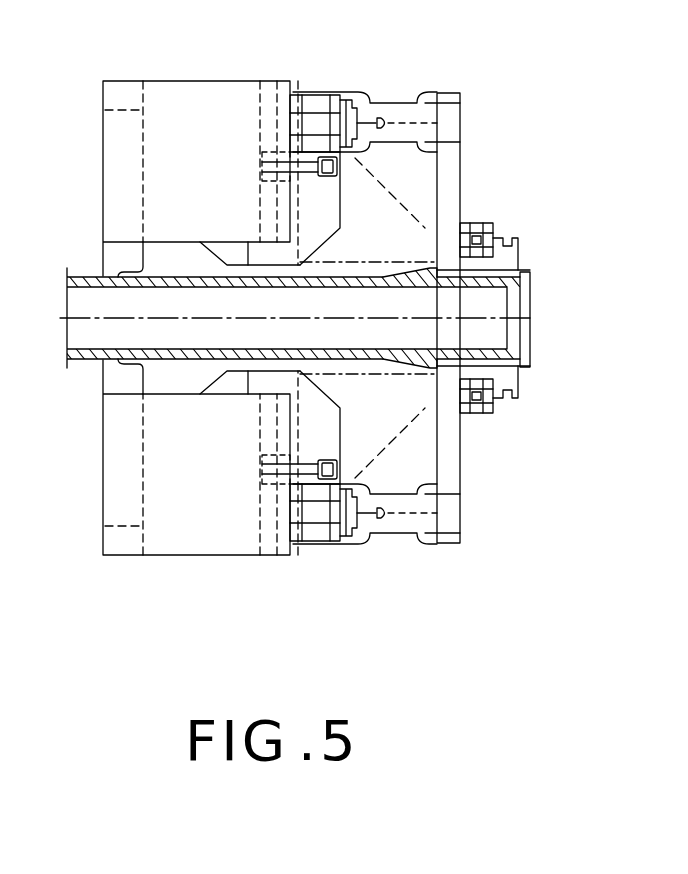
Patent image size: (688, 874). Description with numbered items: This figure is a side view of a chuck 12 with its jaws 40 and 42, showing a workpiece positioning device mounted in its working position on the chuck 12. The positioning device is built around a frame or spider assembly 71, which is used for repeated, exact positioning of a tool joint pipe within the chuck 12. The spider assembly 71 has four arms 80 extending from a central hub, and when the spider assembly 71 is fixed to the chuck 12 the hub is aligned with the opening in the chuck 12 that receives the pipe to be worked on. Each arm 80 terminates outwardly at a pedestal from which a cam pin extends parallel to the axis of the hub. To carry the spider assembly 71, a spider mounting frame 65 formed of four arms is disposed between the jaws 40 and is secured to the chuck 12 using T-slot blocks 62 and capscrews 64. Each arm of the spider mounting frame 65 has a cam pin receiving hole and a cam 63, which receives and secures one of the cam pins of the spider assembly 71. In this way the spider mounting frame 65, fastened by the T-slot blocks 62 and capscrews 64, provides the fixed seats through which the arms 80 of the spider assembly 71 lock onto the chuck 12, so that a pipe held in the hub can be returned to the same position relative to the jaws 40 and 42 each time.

The chuck 12 is at (195, 80).
The jaws 40 is at (393, 403).
The jaws 42 is at (118, 135).
The T-slot blocks 62 is at (290, 157).
The cam 63 is at (330, 92).
The capscrews 64 is at (342, 168).
The spider mounting frame 65 is at (317, 218).
The spider assembly 71 is at (462, 160).
The arms 80 is at (462, 192).